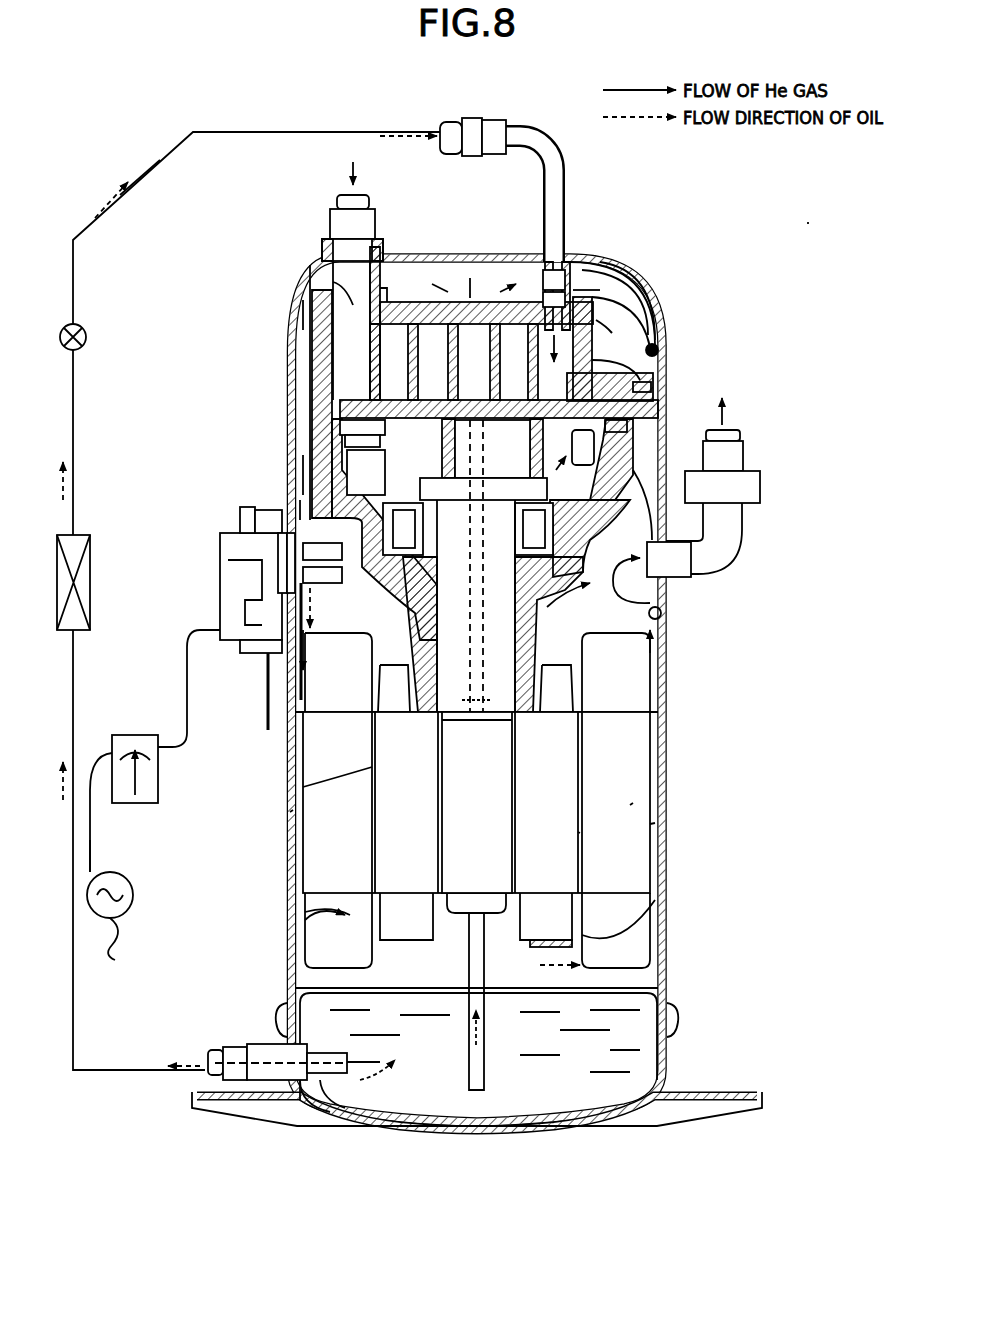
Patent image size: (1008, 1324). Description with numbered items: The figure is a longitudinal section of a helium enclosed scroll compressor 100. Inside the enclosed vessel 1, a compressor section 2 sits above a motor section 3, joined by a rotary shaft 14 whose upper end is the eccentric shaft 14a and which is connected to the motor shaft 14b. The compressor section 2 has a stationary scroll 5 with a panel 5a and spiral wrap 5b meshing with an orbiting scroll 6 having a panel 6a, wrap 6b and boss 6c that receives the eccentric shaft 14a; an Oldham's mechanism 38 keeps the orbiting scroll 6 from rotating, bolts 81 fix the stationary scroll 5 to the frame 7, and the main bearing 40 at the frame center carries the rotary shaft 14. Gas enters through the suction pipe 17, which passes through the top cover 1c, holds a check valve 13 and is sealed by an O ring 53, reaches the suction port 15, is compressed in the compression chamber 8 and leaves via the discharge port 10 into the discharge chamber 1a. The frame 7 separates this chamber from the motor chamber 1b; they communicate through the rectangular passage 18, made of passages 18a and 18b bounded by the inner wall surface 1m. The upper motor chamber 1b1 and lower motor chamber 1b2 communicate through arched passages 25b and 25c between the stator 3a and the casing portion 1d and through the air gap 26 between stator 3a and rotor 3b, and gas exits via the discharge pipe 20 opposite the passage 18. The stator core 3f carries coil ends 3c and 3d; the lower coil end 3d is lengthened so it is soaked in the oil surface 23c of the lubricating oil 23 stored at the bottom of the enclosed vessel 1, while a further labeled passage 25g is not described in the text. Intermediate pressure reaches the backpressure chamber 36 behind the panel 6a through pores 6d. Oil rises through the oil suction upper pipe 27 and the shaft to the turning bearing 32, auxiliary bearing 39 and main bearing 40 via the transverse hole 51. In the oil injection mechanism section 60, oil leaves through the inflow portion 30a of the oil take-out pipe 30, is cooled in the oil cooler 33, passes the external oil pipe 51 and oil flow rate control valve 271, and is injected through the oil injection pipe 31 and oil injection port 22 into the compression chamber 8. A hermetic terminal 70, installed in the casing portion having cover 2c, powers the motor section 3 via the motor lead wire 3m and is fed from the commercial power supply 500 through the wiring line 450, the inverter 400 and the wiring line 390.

The enclosed vessel 1 is at (468, 256).
The discharge chamber 1a is at (640, 270).
The motor chamber 1b is at (617, 540).
The upper motor chamber 1b1 is at (300, 700).
The lower motor chamber 1b2 is at (305, 912).
The top cover 1c is at (648, 292).
The casing portion 1d is at (660, 712).
The inner wall surface 1m is at (667, 605).
The compressor section 2 is at (598, 325).
The cover 2c is at (678, 1052).
The motor section 3 is at (625, 750).
The stator 3a is at (592, 782).
The rotor 3b is at (502, 812).
The coil end 3c is at (365, 645).
The coil end 3d is at (655, 900).
The stator core 3f is at (633, 803).
The motor lead wire 3m is at (348, 600).
The stationary scroll 5 is at (612, 285).
The panel 5a is at (582, 300).
The spiral wrap 5b is at (566, 290).
The orbiting scroll 6 is at (630, 320).
The panel 6a is at (645, 412).
The spiral wrap 6b is at (630, 345).
The boss 6c is at (578, 470).
The pores 6d is at (340, 452).
The frame 7 is at (634, 478).
The compression chamber 8 is at (454, 362).
The discharge port 10 is at (515, 295).
The check valve 13 is at (338, 288).
The rotary shaft 14 is at (303, 740).
The eccentric shaft 14a is at (453, 520).
The motor shaft 14b is at (303, 860).
The suction port 15 is at (312, 366).
The suction pipe 17 is at (337, 200).
The rectangular passage 18 is at (212, 376).
The passage 18a is at (308, 398).
The passage 18b is at (308, 428).
The discharge pipe 20 is at (762, 490).
The oil injection port 22 is at (545, 300).
The lubricating oil 23 is at (300, 995).
The oil surface 23c is at (655, 955).
The arched passage 25b is at (290, 812).
The arched passage 25c is at (655, 823).
The lead wire 25g is at (580, 833).
The air gap 26 is at (303, 790).
The oil suction upper pipe 27 is at (490, 1070).
The oil take-out pipe 30 is at (255, 1048).
The inflow portion 30a is at (335, 1085).
The oil injection pipe 31 is at (528, 150).
The turning bearing 32 is at (468, 606).
The oil cooler 33 is at (92, 555).
The backpressure chamber 36 is at (630, 432).
The Oldham's mechanism 38 is at (651, 388).
The auxiliary bearing 39 is at (540, 650).
The main bearing 40 is at (555, 498).
The external oil pipe 51 is at (137, 195).
The O ring 53 is at (312, 300).
The oil injection mechanism section 60 is at (250, 128).
The hermetic terminal 70 is at (222, 606).
The bolts 81 is at (652, 362).
The helium enclosed scroll compressor 100 is at (810, 222).
The oil flow rate control valve 271 is at (88, 338).
The wiring line 390 is at (180, 665).
The inverter 400 is at (128, 735).
The wiring line 450 is at (100, 858).
The commercial power supply 500 is at (116, 933).